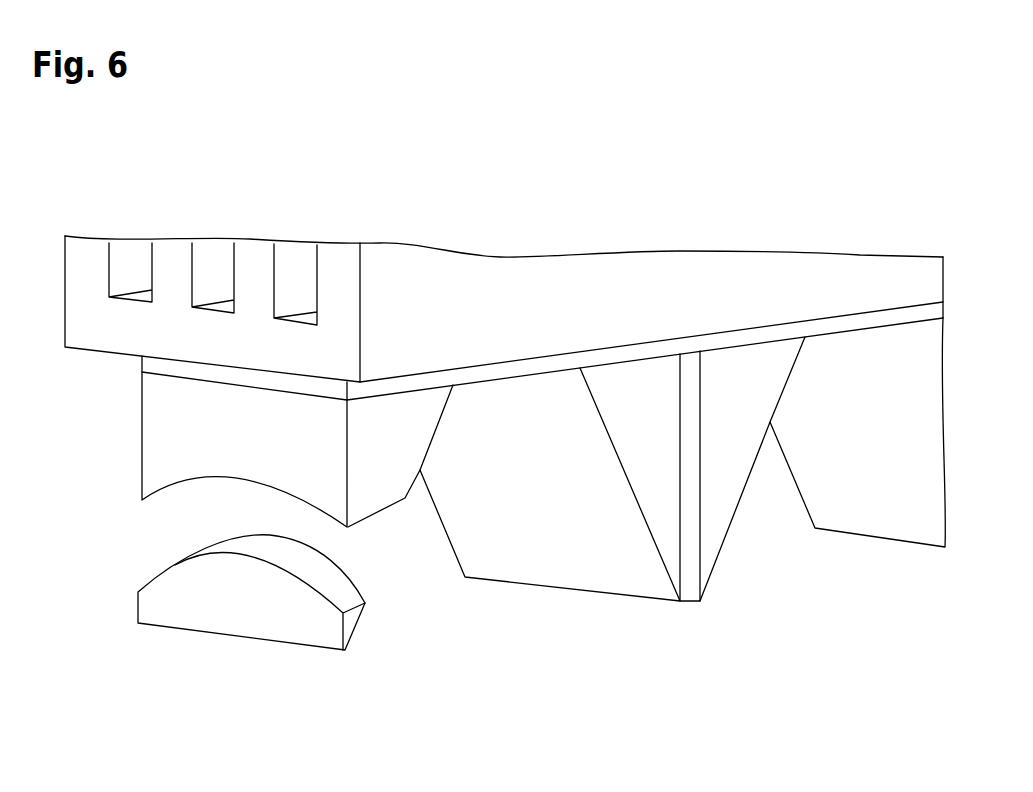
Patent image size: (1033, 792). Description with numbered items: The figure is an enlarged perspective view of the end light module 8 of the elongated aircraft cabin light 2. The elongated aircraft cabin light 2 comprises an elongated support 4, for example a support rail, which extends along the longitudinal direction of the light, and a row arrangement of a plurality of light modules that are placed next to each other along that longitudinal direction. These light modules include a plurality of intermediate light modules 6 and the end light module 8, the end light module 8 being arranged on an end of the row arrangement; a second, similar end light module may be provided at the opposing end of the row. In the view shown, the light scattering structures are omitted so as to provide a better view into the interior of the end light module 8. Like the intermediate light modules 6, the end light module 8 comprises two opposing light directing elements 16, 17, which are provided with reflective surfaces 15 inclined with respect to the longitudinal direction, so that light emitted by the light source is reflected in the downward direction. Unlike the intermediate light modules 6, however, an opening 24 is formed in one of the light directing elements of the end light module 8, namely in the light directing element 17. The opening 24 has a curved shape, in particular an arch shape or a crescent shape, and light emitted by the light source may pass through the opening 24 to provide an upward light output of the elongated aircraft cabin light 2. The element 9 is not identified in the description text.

The elongated aircraft cabin light 2 is at (610, 200).
The elongated support 4 is at (437, 302).
The intermediate light module 6 is at (827, 625).
The end light module 8 is at (497, 655).
The clamping element 9 is at (183, 657).
The reflective surface 15 is at (593, 548).
The light directing element 16 is at (652, 405).
The light directing element 17 is at (182, 430).
The opening 24 is at (147, 545).